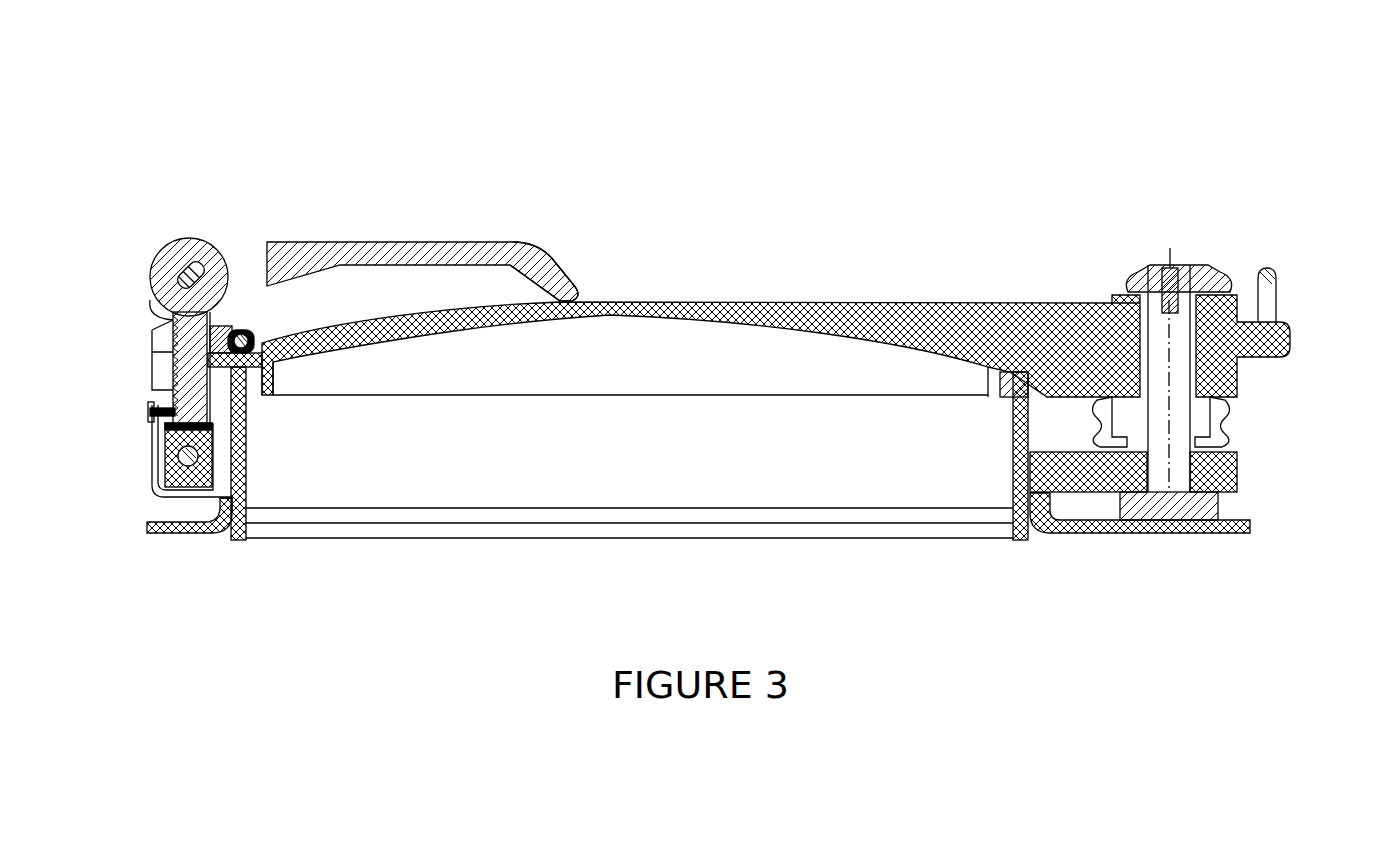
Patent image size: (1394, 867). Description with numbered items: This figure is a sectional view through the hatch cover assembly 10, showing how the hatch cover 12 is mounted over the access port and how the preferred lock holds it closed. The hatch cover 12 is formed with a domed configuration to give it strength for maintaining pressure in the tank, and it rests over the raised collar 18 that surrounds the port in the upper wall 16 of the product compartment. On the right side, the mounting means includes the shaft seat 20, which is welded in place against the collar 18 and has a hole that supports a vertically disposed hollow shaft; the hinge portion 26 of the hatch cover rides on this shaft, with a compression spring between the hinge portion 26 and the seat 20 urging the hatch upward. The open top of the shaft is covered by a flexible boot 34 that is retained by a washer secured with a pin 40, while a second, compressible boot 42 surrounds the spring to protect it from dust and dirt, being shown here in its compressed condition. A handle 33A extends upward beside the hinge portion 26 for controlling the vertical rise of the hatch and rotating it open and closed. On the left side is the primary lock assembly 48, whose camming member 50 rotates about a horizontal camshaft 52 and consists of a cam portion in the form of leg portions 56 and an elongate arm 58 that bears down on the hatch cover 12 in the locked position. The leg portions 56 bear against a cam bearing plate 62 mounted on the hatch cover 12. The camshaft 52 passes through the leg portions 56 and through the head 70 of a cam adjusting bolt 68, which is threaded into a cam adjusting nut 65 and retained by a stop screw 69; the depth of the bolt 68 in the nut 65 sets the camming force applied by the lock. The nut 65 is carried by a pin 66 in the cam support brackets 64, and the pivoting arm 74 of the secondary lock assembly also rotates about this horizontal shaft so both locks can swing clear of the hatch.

The hatch cover assembly 10 is at (740, 80).
The hatch cover 12 is at (641, 300).
The upper wall 16 is at (185, 535).
The collar 18 is at (246, 487).
The shaft seat 20 is at (1237, 470).
The hinge portion 26 is at (935, 303).
The handle 33A is at (1278, 303).
The boot 34 is at (1220, 272).
The pin 40 is at (1170, 245).
The boot 42 is at (1240, 420).
The primary lock assembly 48 is at (172, 160).
The camming member 50 is at (360, 246).
The camshaft 52 is at (202, 247).
The leg portions 56 is at (145, 288).
The elongate arm 58 is at (487, 241).
The cam bearing plate 62 is at (232, 336).
The cam support brackets 64 is at (165, 447).
The cam adjusting nut 65 is at (232, 452).
The pin 66 is at (167, 490).
The cam adjusting bolt 68 is at (173, 320).
The stop screw 69 is at (148, 412).
The head 70 is at (137, 260).
The pivoting arm 74 is at (260, 332).